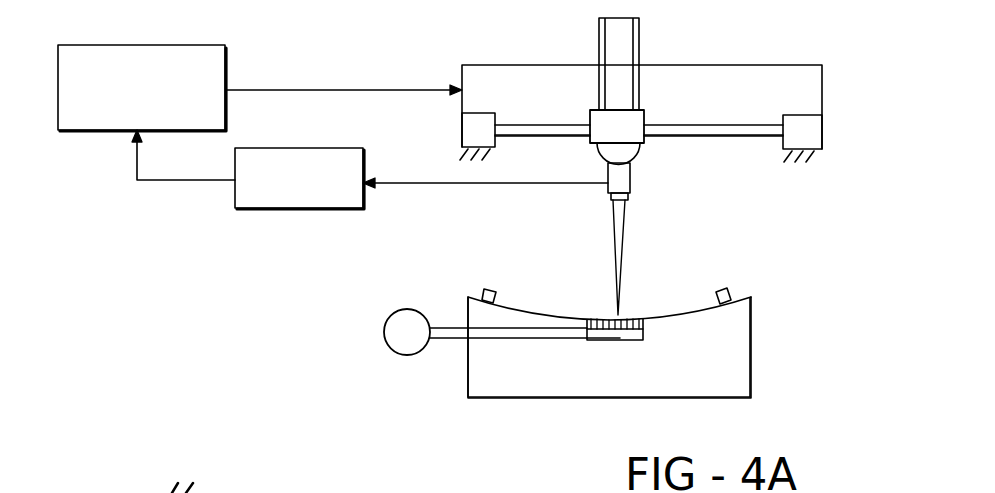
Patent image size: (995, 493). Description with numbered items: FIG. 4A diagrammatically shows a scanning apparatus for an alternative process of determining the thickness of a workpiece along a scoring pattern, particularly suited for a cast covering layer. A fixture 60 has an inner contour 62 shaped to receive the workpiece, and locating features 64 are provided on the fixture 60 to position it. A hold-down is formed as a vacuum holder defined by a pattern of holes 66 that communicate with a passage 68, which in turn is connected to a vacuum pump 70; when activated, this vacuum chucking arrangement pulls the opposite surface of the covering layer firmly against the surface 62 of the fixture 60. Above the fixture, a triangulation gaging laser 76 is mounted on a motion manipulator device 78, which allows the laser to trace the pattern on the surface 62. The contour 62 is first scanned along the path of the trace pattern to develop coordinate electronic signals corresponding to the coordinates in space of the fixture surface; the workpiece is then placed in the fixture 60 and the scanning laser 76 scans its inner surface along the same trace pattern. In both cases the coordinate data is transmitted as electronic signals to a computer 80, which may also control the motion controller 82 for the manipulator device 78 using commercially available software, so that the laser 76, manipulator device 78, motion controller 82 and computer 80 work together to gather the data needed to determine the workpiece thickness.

The fixture 60 is at (752, 350).
The inner contour 62 is at (678, 309).
The locating features 64 is at (490, 290).
The pattern of holes 66 is at (625, 318).
The passage 68 is at (448, 342).
The vacuum pump 70 is at (385, 320).
The triangulation gaging laser 76 is at (631, 183).
The motion manipulator device 78 is at (822, 80).
The computer 80 is at (258, 208).
The motion controller 82 is at (234, 14).